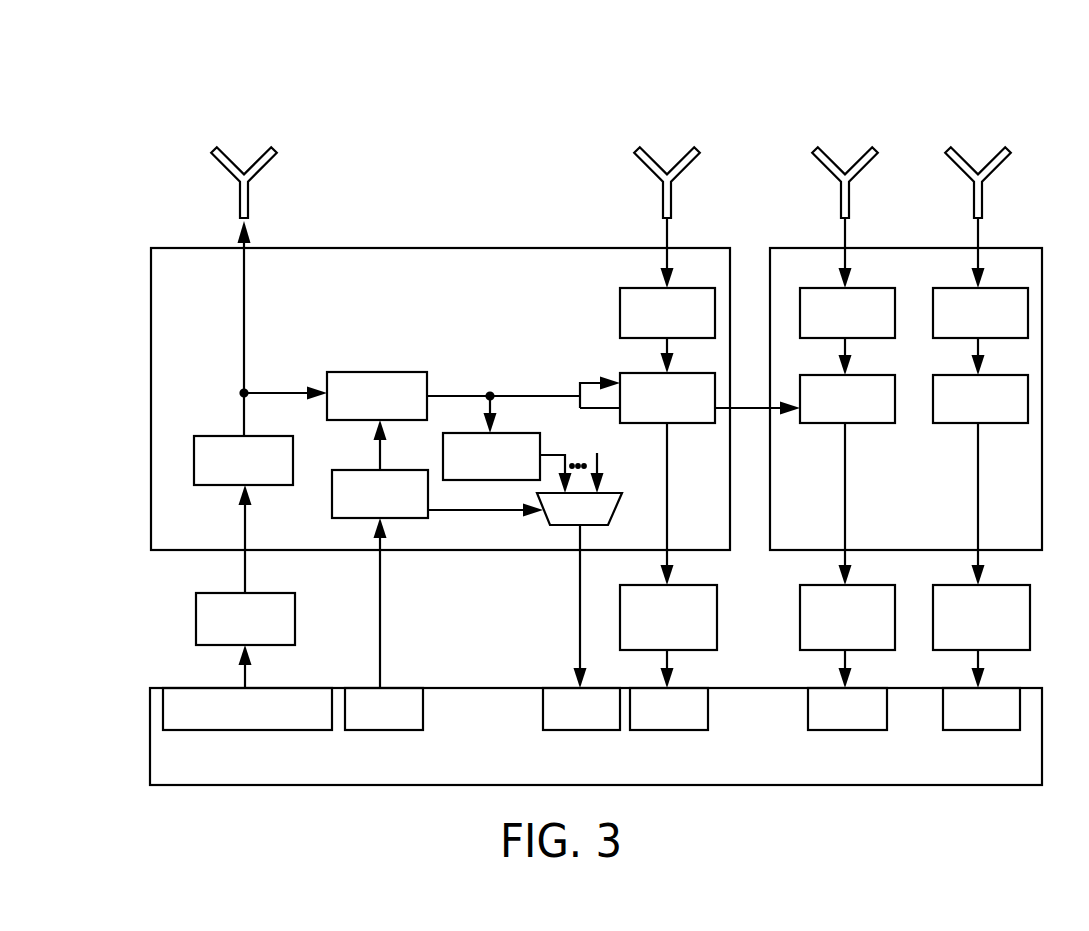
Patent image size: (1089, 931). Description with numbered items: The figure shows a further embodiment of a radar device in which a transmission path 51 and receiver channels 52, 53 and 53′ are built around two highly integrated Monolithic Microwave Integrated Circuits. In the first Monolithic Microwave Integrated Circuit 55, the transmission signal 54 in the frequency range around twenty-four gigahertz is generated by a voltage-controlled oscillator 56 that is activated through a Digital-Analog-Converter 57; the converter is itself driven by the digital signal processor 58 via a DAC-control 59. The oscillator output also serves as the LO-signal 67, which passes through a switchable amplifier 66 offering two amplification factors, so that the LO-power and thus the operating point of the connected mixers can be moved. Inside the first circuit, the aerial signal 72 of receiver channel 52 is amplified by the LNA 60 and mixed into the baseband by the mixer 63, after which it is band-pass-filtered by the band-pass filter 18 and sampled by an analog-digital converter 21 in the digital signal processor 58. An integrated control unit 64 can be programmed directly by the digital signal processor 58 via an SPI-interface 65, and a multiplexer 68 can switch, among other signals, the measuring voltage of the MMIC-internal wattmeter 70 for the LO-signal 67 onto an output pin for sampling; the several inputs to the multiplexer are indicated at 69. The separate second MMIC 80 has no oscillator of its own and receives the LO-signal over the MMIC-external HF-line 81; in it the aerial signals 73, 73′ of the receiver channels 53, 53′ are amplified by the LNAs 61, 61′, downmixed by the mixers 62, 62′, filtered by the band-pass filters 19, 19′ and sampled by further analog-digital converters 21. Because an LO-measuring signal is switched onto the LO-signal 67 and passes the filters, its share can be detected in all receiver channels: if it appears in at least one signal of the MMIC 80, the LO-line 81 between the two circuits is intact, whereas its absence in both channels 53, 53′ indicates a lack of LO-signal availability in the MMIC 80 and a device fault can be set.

The transmission path 51 is at (255, 133).
The receiver channel 52 is at (675, 133).
The receiver channel 53 is at (855, 133).
The receiver channel 53′ is at (988, 133).
The transmission signal 54 is at (244, 313).
The Monolithic Microwave Integrated Circuit 55 is at (157, 531).
The voltage-controlled oscillator 56 is at (226, 472).
The Digital-Analog-Converter 57 is at (227, 631).
The digital signal processor 58 is at (163, 759).
The DAC-control 59 is at (227, 723).
The LNA 60 is at (649, 324).
The LNA 61 is at (829, 324).
The LNA 61′ is at (962, 324).
The mixer 62 is at (829, 411).
The mixer 62′ is at (962, 411).
The mixer 63 is at (649, 409).
The control unit 64 is at (362, 505).
The SPI-interface 65 is at (366, 723).
The switchable amplifier 66 is at (359, 407).
The LO-signal 67 is at (504, 395).
The multiplexer 68 is at (562, 522).
The multiplexer inputs 69 is at (568, 453).
The wattmeter 70 is at (473, 468).
The aerial signal 72 is at (668, 247).
The aerial signal 73 is at (846, 247).
The aerial signal 73′ is at (979, 247).
The MMIC 80 is at (1030, 536).
The HF-line 81 is at (746, 408).
The band-pass filter 18 is at (650, 629).
The band-pass filter 19 is at (829, 629).
The band-pass filter 19′ is at (963, 629).
The analog-digital converter 21 is at (564, 723).